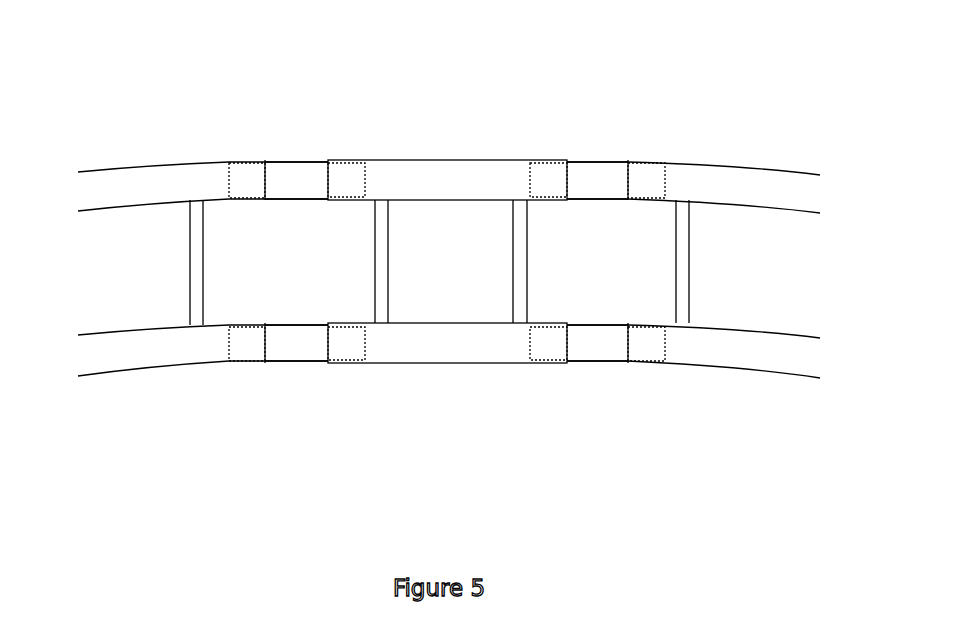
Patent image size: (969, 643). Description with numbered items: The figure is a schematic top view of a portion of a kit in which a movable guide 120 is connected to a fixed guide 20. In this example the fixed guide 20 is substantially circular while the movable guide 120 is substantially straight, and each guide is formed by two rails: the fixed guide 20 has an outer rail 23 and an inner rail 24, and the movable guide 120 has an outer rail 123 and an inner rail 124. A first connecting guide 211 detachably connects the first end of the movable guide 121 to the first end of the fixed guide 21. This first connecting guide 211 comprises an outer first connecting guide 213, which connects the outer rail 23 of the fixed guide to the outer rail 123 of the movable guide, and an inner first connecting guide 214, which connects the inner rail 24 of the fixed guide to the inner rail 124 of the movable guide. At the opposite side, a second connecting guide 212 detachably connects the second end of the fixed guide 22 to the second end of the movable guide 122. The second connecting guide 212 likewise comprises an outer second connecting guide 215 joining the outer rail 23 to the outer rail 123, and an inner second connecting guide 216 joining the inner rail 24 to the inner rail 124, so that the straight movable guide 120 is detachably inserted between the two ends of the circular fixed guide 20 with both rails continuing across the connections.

The fixed guide 20 is at (136, 86).
The first end of the fixed guide 21 is at (200, 168).
The second end of the fixed guide 22 is at (682, 170).
The outer rail of the fixed guide 23 is at (93, 170).
The inner rail of the fixed guide 24 is at (103, 356).
The first connecting guide 211 is at (287, 137).
The second connecting guide 212 is at (599, 137).
The outer first connecting guide 213 is at (308, 165).
The inner first connecting guide 214 is at (308, 350).
The outer second connecting guide 215 is at (614, 170).
The inner second connecting guide 216 is at (601, 353).
The movable guide 120 is at (447, 115).
The first end of the movable guide 121 is at (342, 160).
The second end of the movable guide 122 is at (522, 350).
The outer rail of the movable guide 123 is at (492, 168).
The inner rail of the movable guide 124 is at (445, 344).